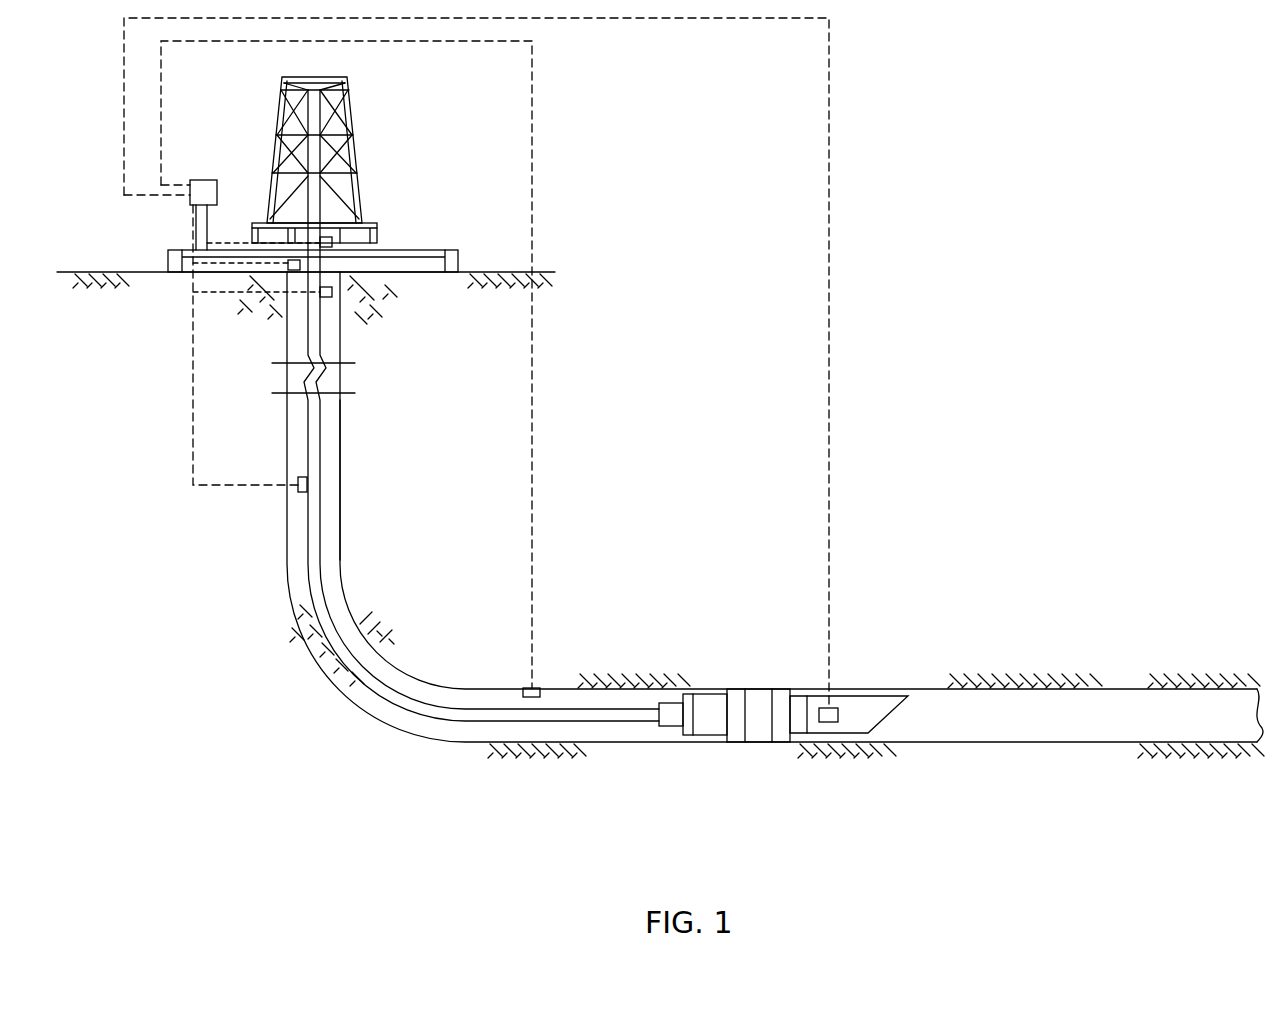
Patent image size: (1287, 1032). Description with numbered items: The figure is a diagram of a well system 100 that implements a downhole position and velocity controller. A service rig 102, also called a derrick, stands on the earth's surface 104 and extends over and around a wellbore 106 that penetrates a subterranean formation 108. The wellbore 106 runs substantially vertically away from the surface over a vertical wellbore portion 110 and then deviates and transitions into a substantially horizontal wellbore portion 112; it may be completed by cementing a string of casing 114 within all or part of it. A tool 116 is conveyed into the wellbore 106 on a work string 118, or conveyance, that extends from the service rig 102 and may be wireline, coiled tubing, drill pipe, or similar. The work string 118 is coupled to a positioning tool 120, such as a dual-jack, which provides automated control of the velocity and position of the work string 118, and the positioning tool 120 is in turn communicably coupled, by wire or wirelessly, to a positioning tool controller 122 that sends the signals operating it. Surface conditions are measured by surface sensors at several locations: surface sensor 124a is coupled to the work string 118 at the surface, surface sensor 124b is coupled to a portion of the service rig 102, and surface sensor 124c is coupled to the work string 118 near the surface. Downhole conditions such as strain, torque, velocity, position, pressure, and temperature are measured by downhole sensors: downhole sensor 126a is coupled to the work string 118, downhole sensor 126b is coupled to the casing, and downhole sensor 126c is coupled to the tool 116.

The well system 100 is at (690, 289).
The service rig 102 is at (368, 119).
The earth's surface 104 is at (490, 270).
The wellbore 106 is at (332, 437).
The subterranean formation 108 is at (503, 650).
The vertical wellbore portion 110 is at (158, 463).
The horizontal wellbore portion 112 is at (1103, 685).
The string of casing 114 is at (345, 517).
The tool 116 is at (736, 748).
The work string 118 is at (415, 706).
The positioning tool 120 is at (345, 266).
The positioning tool controller 122 is at (207, 180).
The surface sensor 124a is at (340, 243).
The surface sensor 124b is at (302, 268).
The surface sensor 124c is at (333, 296).
The downhole sensor 126a is at (298, 488).
The downhole sensor 126b is at (533, 688).
The downhole sensor 126c is at (830, 708).